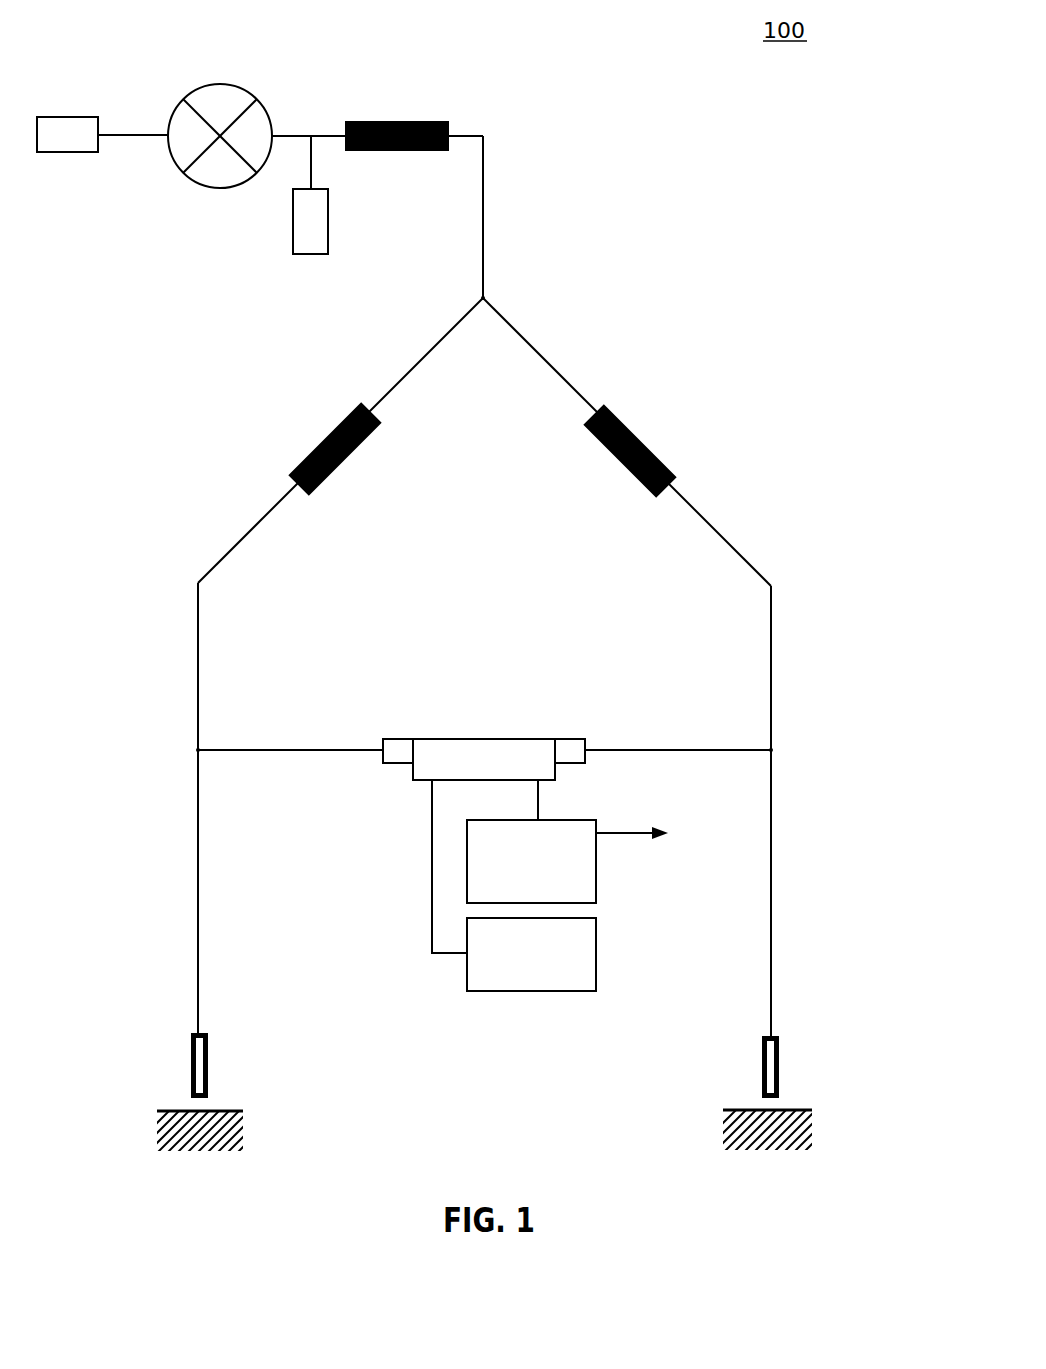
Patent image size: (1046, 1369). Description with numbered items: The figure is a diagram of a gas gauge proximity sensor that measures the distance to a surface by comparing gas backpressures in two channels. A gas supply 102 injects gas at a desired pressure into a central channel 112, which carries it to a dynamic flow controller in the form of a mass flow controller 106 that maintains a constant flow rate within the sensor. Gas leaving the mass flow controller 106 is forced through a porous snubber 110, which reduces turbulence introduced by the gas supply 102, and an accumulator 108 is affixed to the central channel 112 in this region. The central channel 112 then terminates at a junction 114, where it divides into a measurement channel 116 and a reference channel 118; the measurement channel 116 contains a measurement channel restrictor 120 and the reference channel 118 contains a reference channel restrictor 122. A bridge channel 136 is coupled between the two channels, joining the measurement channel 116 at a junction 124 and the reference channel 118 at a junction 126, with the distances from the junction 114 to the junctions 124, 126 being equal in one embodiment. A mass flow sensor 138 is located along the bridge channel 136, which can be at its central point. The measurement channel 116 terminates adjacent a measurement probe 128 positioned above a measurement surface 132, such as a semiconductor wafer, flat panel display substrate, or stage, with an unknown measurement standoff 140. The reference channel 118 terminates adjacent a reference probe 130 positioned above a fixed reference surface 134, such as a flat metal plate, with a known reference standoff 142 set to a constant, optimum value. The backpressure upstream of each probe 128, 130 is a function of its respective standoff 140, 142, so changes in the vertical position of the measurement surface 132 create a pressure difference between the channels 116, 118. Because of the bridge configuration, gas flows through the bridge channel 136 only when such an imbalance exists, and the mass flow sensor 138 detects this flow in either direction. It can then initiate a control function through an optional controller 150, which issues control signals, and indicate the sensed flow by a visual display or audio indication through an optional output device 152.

The gas supply 102 is at (80, 117).
The mass flow controller 106 is at (225, 84).
The accumulator 108 is at (312, 254).
The porous snubber 110 is at (395, 122).
The central channel 112 is at (118, 135).
The junction 114 is at (483, 298).
The measurement channel 116 is at (403, 377).
The reference channel 118 is at (520, 335).
The measurement channel restrictor 120 is at (362, 450).
The reference channel restrictor 122 is at (655, 460).
The junction 124 is at (198, 750).
The junction 126 is at (771, 750).
The measurement probe 128 is at (191, 1050).
The reference probe 130 is at (780, 1048).
The measurement surface 132 is at (240, 1108).
The reference surface 134 is at (808, 1108).
The bridge channel 136 is at (290, 750).
The mass flow sensor 138 is at (497, 740).
The measurement standoff 140 is at (199, 1106).
The reference standoff 142 is at (765, 1106).
The controller 150 is at (596, 884).
The output device 152 is at (596, 960).